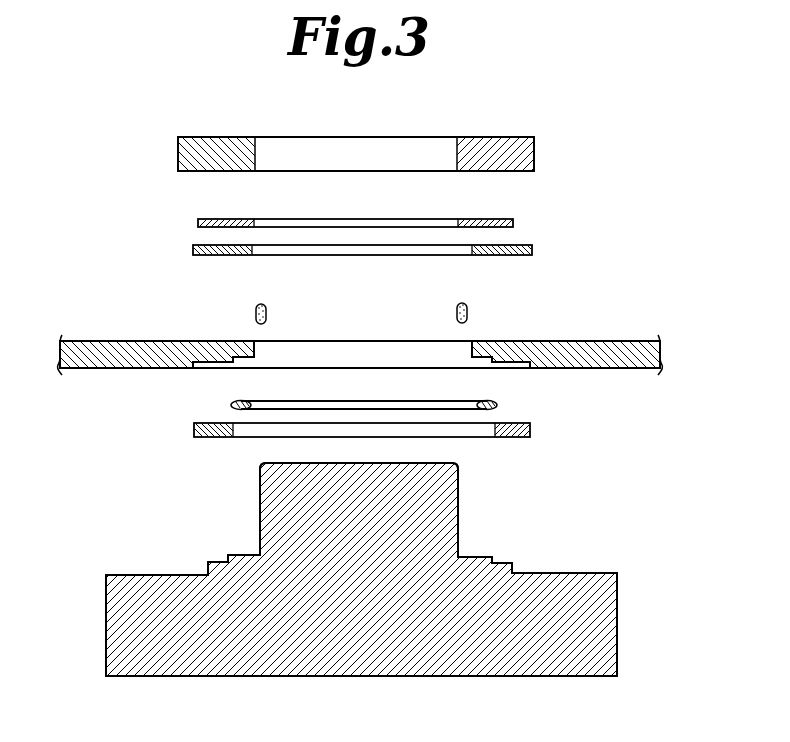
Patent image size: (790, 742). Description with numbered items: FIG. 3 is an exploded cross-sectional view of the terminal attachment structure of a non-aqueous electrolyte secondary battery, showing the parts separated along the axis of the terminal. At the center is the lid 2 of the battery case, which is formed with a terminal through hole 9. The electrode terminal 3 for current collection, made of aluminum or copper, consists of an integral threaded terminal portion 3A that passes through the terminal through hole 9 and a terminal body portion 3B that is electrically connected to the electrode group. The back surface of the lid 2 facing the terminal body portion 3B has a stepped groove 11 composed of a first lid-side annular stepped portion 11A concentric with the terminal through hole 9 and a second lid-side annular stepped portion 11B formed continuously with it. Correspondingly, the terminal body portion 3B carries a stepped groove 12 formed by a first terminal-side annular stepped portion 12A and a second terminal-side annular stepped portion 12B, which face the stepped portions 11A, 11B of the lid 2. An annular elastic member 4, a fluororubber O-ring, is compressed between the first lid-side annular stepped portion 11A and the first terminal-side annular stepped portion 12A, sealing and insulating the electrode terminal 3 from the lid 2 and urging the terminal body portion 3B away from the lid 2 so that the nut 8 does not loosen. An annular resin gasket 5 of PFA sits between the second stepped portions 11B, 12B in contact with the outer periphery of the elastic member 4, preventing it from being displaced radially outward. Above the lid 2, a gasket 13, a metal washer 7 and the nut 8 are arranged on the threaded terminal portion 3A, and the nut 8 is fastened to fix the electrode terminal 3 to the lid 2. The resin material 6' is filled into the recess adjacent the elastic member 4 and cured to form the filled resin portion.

The lid 2 is at (620, 346).
The electrode terminal 3 is at (617, 627).
The threaded terminal portion 3A is at (459, 482).
The terminal body portion 3B is at (607, 595).
The annular elastic member 4 is at (497, 405).
The annular resin gasket 5 is at (531, 431).
The resin material 6' is at (362, 302).
The metal washer 7 is at (513, 224).
The nut 8 is at (534, 170).
The terminal through hole 9 is at (386, 352).
The stepped groove 11 is at (187, 466).
The first lid-side annular stepped portion 11A is at (243, 359).
The second lid-side annular stepped portion 11B is at (202, 365).
The stepped groove 12 is at (581, 500).
The first terminal-side annular stepped portion 12A is at (470, 557).
The second terminal-side annular stepped portion 12B is at (502, 561).
The gasket 13 is at (532, 251).